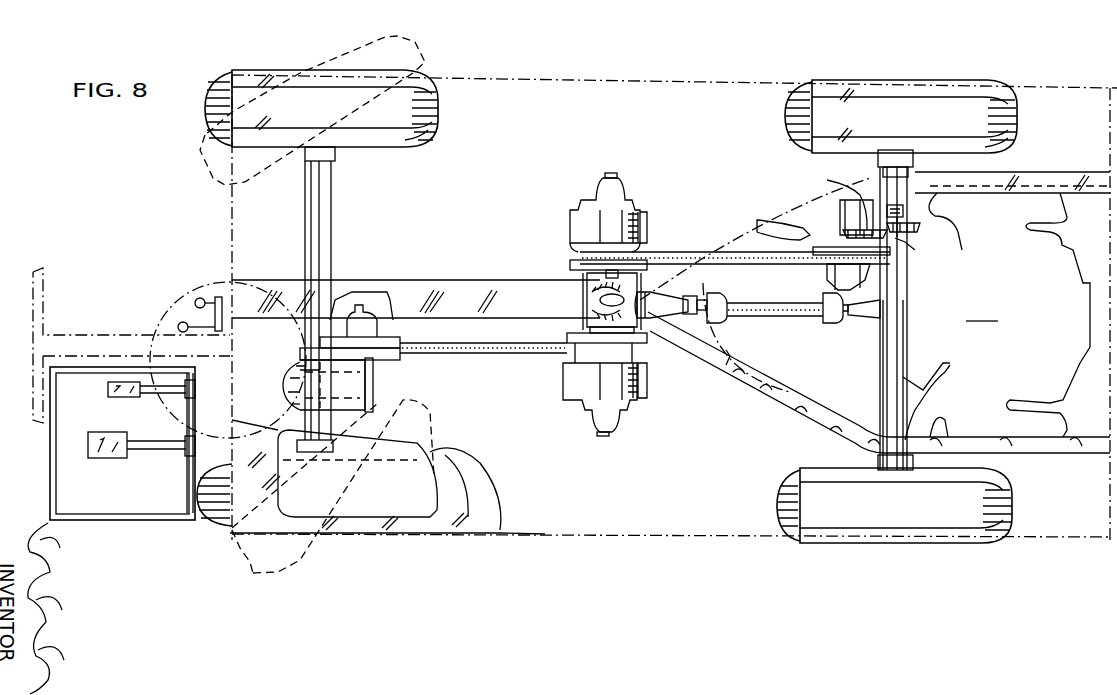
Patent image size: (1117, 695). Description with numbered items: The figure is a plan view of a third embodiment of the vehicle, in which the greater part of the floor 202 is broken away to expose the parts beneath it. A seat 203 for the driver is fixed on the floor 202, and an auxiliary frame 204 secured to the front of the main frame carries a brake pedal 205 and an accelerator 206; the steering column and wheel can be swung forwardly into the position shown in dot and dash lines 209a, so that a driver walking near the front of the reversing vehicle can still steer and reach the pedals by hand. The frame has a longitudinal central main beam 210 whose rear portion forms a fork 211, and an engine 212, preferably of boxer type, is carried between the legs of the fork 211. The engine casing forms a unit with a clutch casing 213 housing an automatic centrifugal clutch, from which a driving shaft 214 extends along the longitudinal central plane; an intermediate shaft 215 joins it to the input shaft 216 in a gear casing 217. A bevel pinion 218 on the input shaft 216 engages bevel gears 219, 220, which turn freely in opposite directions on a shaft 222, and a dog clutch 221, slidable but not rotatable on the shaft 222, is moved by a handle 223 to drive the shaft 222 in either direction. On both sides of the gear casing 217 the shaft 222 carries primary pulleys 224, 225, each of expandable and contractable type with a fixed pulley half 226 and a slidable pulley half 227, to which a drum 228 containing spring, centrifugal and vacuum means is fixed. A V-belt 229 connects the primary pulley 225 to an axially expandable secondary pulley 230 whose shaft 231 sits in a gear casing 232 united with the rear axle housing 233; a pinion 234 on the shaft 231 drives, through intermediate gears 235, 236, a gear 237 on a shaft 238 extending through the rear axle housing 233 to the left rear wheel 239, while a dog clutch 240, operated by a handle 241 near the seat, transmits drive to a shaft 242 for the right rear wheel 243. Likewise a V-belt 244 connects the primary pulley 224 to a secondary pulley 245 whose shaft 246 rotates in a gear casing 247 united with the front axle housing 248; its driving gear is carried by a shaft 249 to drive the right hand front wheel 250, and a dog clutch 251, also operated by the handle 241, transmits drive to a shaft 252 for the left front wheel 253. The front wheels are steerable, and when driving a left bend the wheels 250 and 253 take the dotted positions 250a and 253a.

The floor 202 is at (468, 528).
The seat 203 is at (380, 520).
The auxiliary frame 204 is at (141, 516).
The brake pedal 205 is at (98, 456).
The accelerator 206 is at (118, 398).
The forwardly swung steering column position 209a is at (46, 298).
The longitudinal central main beam 210 is at (457, 290).
The fork 211 is at (789, 409).
The engine 212 is at (1006, 306).
The clutch casing 213 is at (892, 365).
The driving shaft 214 is at (846, 322).
The intermediate shaft 215 is at (778, 325).
The input shaft 216 is at (650, 313).
The gear casing 217 is at (645, 300).
The bevel pinion 218 is at (633, 293).
The bevel gear 219 is at (600, 318).
The bevel gear 220 is at (595, 292).
The dog clutch 221 is at (592, 306).
The shaft 222 is at (590, 340).
The handle 223 is at (200, 298).
The primary pulley 224 is at (647, 370).
The primary pulley 225 is at (562, 254).
The pulley half 226 is at (571, 265).
The pulley half 227 is at (646, 238).
The drum 228 is at (633, 222).
The belt 229 is at (747, 264).
The secondary pulley 230 is at (826, 270).
The shaft 231 is at (838, 251).
The gear casing 232 is at (833, 214).
The rear axle housing 233 is at (888, 400).
The pinion 234 is at (770, 224).
The intermediate gear 235 is at (858, 204).
The intermediate gear 236 is at (873, 200).
The gear 237 is at (918, 230).
The shaft 238 is at (904, 243).
The left rear wheel 239 is at (875, 536).
The dog clutch 240 is at (910, 206).
The handle 241 is at (180, 323).
The shaft 242 is at (900, 197).
The right rear wheel 243 is at (980, 115).
The belt 244 is at (488, 356).
The secondary pulley 245 is at (416, 360).
The shaft 246 is at (375, 368).
The gear casing 247 is at (373, 395).
The front axle housing 248 is at (309, 238).
The shaft 249 is at (310, 372).
The right hand front wheel 250 is at (420, 98).
The left-bend position of right front wheel 250a is at (212, 161).
The dog clutch 251 is at (286, 392).
The shaft 252 is at (292, 408).
The left front wheel 253 is at (210, 525).
The left-bend position of left front wheel 253a is at (244, 553).